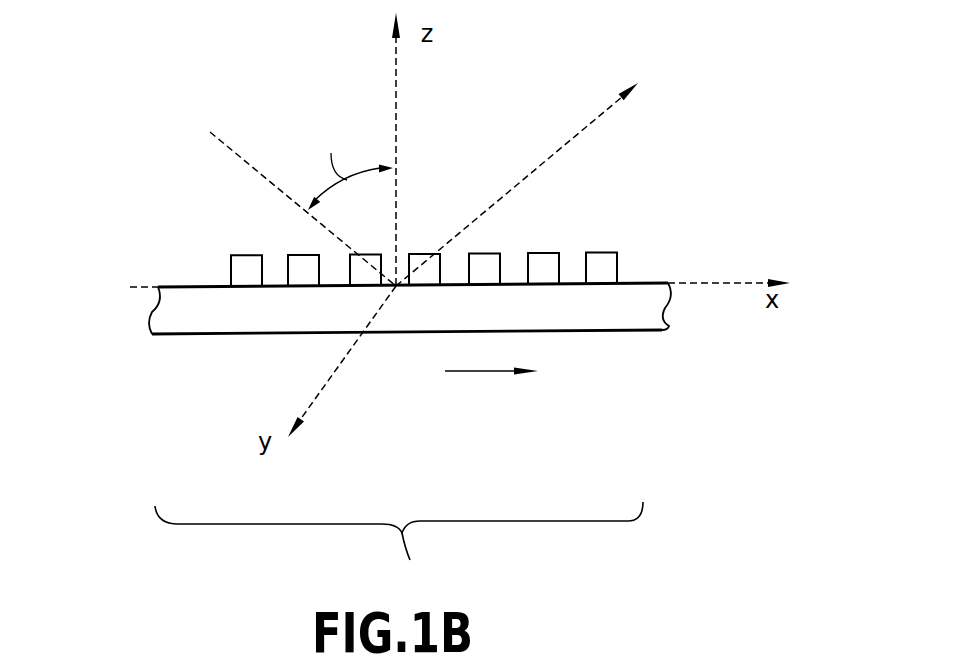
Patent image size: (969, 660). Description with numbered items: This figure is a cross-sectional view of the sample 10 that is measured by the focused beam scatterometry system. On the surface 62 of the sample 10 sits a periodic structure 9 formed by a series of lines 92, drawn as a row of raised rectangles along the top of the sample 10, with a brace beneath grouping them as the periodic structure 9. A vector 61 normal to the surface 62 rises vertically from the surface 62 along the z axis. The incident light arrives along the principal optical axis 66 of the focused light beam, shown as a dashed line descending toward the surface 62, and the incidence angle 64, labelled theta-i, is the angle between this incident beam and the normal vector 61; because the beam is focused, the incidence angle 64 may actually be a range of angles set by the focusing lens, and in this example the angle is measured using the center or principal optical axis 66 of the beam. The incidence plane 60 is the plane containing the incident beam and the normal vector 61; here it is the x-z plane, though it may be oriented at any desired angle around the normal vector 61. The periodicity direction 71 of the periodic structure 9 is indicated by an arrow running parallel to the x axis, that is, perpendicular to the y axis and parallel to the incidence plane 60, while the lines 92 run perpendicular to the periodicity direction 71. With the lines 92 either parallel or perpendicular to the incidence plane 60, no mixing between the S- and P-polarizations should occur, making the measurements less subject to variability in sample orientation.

The periodic structure 9 is at (399, 548).
The sample 10 is at (608, 315).
The incidence plane 60 is at (222, 242).
The vector normal to the surface 61 is at (396, 55).
The surface 62 is at (178, 286).
The incidence angle 64 is at (318, 118).
The principal optical axis 66 is at (227, 148).
The periodicity direction 71 is at (473, 372).
The lines 92 is at (605, 233).